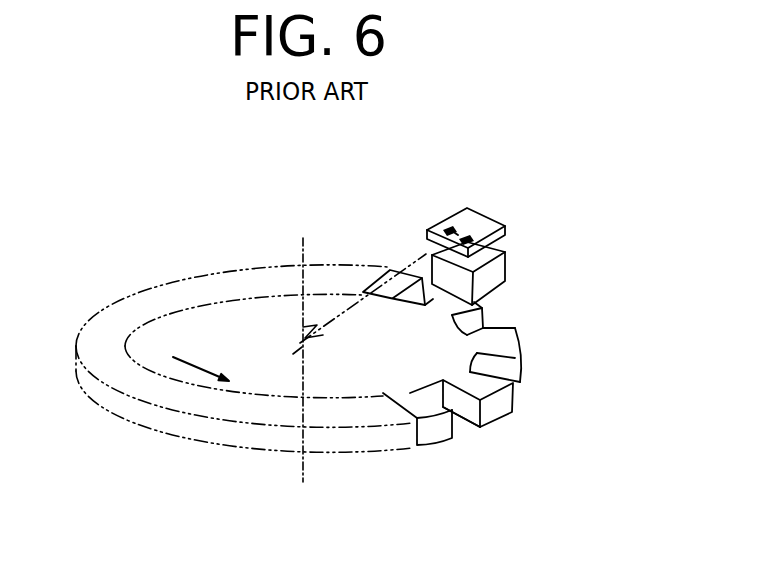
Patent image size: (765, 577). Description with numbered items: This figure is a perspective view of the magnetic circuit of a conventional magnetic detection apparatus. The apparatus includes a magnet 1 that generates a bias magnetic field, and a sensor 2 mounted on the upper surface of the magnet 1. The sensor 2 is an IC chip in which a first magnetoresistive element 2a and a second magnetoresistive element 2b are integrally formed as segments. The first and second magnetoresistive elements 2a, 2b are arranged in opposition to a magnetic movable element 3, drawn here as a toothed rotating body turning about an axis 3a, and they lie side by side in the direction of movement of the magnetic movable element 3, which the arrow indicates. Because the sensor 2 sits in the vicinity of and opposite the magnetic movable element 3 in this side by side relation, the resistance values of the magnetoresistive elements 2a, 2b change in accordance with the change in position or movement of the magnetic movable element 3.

The magnet 1 is at (488, 280).
The sensor 2 is at (505, 203).
The first magnetoresistive element 2a is at (472, 242).
The second magnetoresistive element 2b is at (453, 227).
The magnetic movable element 3 is at (435, 432).
The rotation axis 3a is at (324, 343).